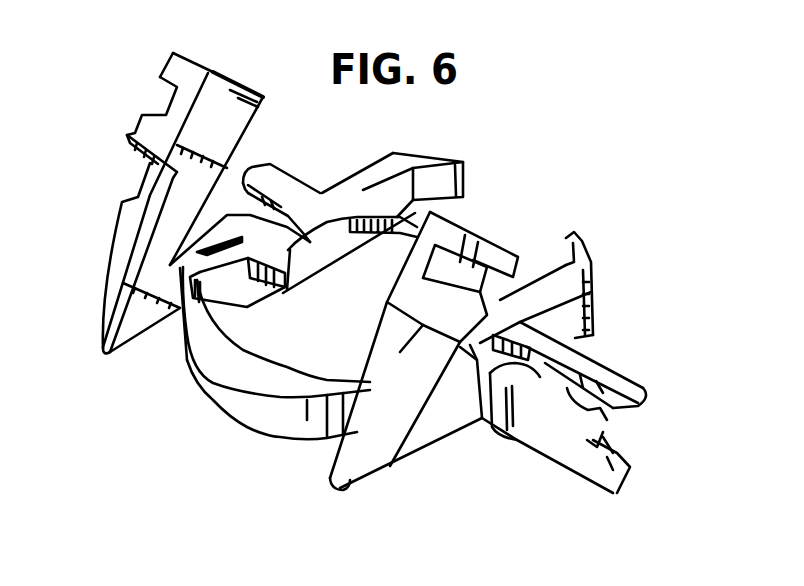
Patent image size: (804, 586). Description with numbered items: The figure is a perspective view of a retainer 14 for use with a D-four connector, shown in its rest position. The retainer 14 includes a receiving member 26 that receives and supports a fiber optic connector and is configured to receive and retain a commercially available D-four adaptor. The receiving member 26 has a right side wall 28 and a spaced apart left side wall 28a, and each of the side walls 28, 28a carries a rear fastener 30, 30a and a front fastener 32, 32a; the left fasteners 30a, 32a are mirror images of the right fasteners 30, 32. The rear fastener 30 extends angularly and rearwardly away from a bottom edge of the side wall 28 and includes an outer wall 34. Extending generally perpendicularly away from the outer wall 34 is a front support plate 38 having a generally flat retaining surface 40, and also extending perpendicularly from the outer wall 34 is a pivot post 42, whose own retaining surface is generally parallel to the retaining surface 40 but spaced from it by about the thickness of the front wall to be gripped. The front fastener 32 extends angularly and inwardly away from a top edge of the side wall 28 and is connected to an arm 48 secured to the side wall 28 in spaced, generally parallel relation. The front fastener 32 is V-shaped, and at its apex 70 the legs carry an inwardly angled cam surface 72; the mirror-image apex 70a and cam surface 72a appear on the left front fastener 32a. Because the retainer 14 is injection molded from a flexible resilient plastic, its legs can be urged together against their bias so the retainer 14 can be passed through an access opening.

The retainer 14 is at (126, 60).
The receiving member 26 is at (353, 212).
The right side wall 28 is at (567, 307).
The left side wall 28a is at (240, 300).
The rear fastener 30 is at (652, 394).
The rear fastener 30a is at (296, 159).
The front fastener 32 is at (486, 227).
The front fastener 32a is at (127, 145).
The outer wall 34 is at (543, 413).
The front support plate 38 is at (573, 365).
The retaining surface 40 is at (603, 417).
The pivot post 42 is at (613, 483).
The arm 48 is at (437, 423).
The apex 70 is at (330, 483).
The apex 70a is at (104, 354).
The cam surface 72 is at (356, 453).
The cam surface 72a is at (110, 273).